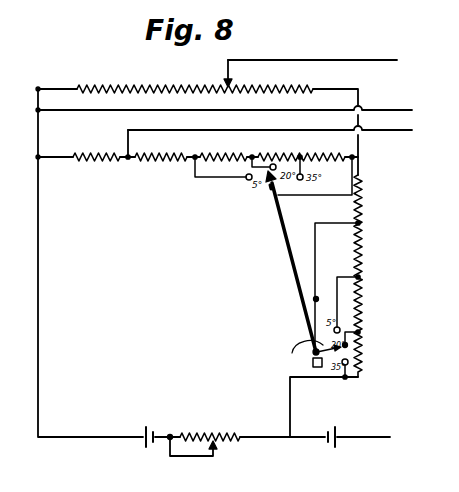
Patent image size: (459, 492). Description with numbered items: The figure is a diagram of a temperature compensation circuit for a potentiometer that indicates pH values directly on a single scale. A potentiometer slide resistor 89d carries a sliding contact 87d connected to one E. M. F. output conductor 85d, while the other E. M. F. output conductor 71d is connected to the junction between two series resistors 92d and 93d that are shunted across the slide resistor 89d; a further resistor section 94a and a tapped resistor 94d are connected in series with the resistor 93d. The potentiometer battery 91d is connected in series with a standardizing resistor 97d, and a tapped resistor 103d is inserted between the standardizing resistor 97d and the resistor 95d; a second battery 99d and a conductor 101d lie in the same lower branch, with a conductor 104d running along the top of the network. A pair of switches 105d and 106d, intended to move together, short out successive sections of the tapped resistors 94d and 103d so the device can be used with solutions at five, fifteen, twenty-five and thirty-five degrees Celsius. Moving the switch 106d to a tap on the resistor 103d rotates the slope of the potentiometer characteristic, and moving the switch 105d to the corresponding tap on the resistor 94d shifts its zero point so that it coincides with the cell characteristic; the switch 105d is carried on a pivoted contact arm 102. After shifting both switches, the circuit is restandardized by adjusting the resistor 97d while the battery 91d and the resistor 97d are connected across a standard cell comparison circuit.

The E. M. F. output conductor 85d is at (326, 58).
The sliding contact 87d is at (226, 66).
The potentiometer slide resistor 89d is at (172, 85).
The conductor 104d is at (386, 110).
The E. M. F. output conductor 71d is at (389, 131).
The series resistor 92d is at (97, 150).
The series resistor 93d is at (165, 150).
The resistor 94a is at (235, 150).
The tapped resistor 94d is at (316, 155).
The resistor 95d is at (366, 193).
The tapped resistor 103d is at (365, 293).
The contact arm 102 is at (292, 262).
The switch 105d is at (266, 197).
The switch 106d is at (308, 356).
The potentiometer battery 91d is at (146, 425).
The standardizing resistor 97d is at (210, 432).
The battery 99d is at (338, 440).
The conductor 101d is at (386, 431).